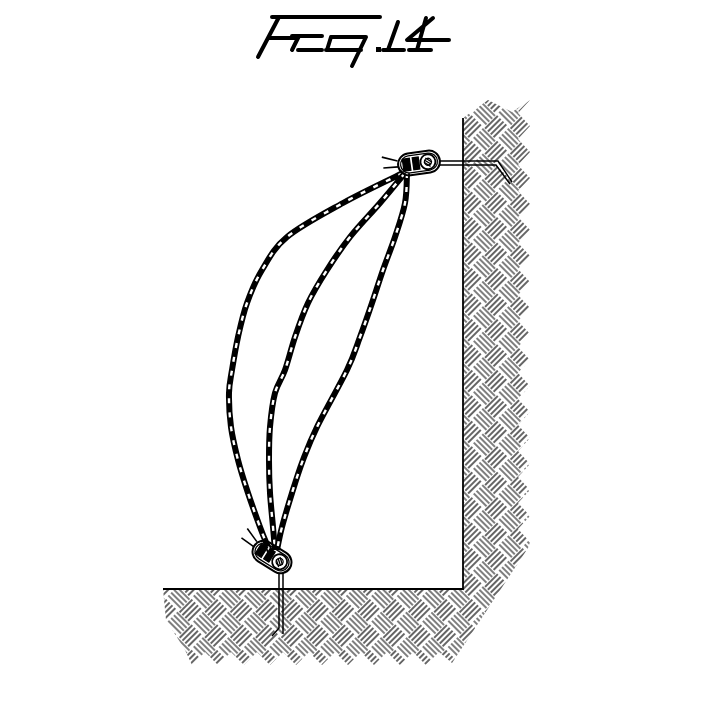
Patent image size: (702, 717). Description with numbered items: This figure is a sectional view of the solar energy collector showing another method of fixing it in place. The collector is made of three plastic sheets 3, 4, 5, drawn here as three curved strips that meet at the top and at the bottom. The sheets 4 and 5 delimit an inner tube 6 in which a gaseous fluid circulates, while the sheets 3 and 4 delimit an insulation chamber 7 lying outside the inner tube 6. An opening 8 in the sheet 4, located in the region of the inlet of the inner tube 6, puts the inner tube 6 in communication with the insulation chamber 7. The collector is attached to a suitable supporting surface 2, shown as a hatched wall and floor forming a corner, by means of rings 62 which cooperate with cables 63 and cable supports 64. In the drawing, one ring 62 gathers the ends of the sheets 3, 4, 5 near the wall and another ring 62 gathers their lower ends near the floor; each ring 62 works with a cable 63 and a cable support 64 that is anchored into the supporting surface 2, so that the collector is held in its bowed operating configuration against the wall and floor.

The supporting surface 2 is at (432, 589).
The plastic sheet 3 is at (232, 378).
The plastic sheet 4 is at (270, 446).
The plastic sheet 5 is at (355, 342).
The inner tube 6 is at (309, 416).
The insulation chamber 7 is at (300, 272).
The opening 8 is at (283, 344).
The ring 62 is at (410, 150).
The cable 63 is at (434, 152).
The cable support 64 is at (456, 172).